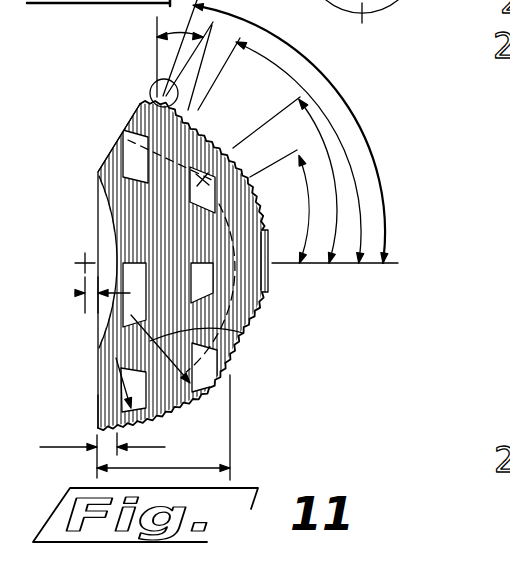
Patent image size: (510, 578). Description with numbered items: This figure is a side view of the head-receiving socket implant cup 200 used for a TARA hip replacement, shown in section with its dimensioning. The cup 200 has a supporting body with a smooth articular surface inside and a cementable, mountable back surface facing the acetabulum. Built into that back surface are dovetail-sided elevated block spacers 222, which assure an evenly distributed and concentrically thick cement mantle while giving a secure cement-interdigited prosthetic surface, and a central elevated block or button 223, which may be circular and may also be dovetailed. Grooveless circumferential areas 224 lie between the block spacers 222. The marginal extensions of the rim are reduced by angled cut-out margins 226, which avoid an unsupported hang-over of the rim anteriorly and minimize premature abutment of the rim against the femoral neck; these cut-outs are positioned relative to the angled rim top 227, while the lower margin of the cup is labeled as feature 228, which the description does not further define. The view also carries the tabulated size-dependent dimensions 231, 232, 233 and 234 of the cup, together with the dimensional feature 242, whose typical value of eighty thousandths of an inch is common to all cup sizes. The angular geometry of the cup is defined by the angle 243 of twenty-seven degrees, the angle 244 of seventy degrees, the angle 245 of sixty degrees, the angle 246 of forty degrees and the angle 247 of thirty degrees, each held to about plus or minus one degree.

The head-receiving socket implant cup 200 is at (113, 107).
The elevated block spacers 222 is at (160, 78).
The central elevated block or button 223 is at (268, 277).
The grooveless circumferential areas 224 is at (203, 127).
The cut-out margins 226 is at (110, 227).
The rim top 227 is at (108, 160).
The lower edge 228 is at (98, 402).
The cup dimension 231 is at (78, 285).
The cup dimension 232 is at (195, 467).
The cup dimension 233 is at (110, 374).
The cup dimension 234 is at (243, 333).
The dimensional feature 242 is at (155, 446).
The angle 243 is at (163, 20).
The angle 244 is at (322, 70).
The angle 245 is at (338, 127).
The angle 246 is at (335, 188).
The angle 247 is at (335, 228).